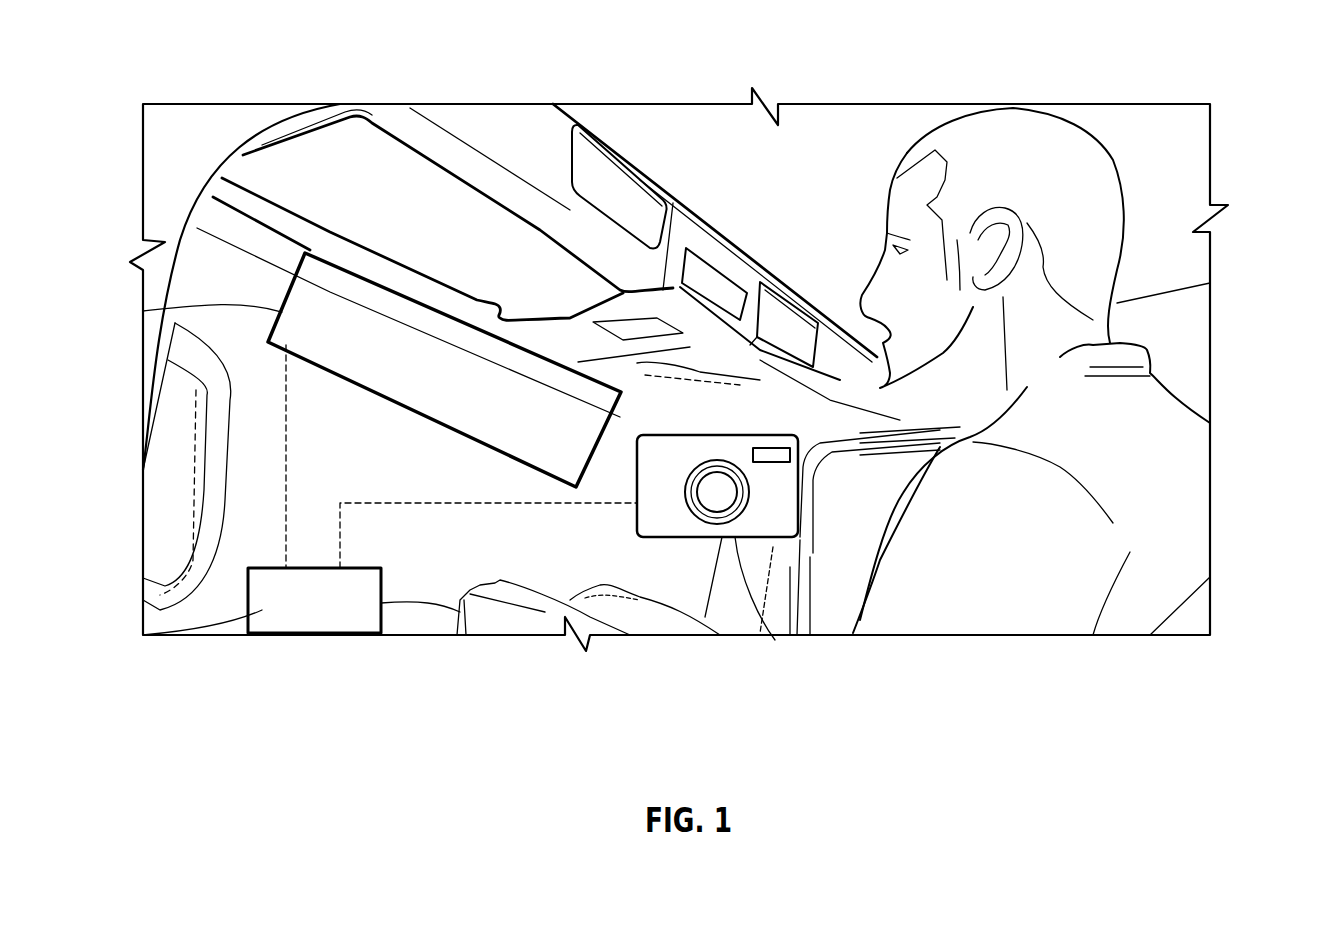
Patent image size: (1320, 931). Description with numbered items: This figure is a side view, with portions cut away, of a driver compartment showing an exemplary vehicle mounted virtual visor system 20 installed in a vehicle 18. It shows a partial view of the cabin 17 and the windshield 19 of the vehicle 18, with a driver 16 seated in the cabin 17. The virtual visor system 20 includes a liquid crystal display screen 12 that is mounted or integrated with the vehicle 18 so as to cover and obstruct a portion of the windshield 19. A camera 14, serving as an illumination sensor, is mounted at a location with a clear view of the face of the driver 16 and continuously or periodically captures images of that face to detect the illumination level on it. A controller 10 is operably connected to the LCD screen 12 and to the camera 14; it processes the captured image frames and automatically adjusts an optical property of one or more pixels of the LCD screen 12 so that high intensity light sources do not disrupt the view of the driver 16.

The controller 10 is at (312, 635).
The liquid crystal display (LCD) screen 12 is at (282, 312).
The camera 14 is at (775, 640).
The driver 16 is at (1170, 352).
The cabin 17 is at (712, 148).
The vehicle 18 is at (800, 148).
The windshield 19 is at (412, 567).
The vehicle mounted virtual visor system 20 is at (616, 662).